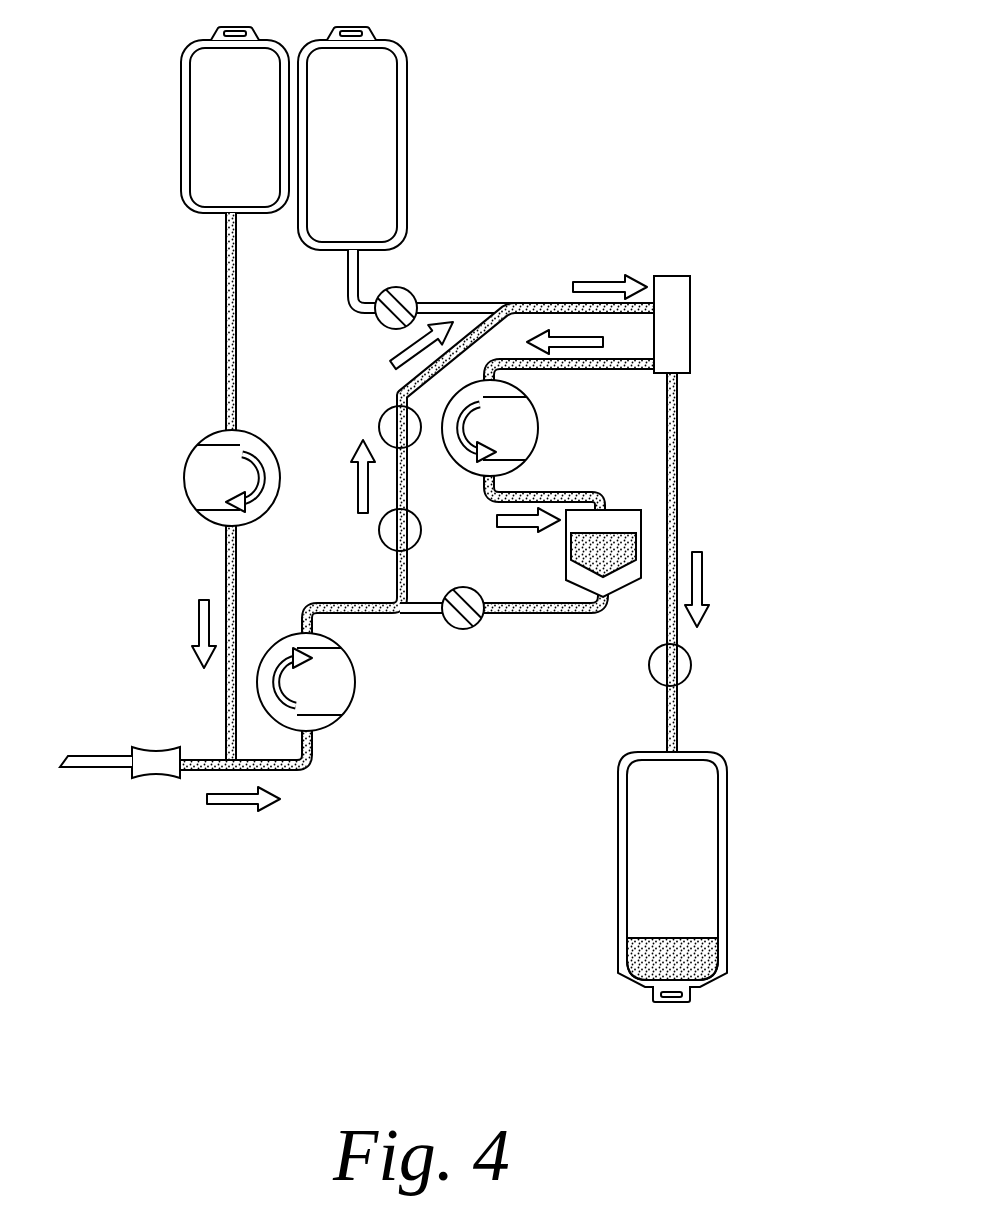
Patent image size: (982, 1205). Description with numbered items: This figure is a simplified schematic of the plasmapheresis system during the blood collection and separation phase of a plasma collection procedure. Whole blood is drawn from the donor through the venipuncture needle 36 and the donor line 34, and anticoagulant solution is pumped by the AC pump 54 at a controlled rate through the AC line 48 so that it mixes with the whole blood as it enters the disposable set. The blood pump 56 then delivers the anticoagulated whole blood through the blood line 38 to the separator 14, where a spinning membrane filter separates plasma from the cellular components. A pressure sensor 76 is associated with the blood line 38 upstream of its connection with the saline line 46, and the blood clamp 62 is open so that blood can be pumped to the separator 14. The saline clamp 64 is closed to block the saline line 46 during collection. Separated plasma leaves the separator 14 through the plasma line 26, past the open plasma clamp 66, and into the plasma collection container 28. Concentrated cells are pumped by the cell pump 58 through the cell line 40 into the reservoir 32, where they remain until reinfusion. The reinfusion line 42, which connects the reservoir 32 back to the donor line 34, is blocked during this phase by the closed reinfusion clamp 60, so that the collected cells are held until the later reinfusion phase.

The separator 14 is at (690, 296).
The plasma line 26 is at (678, 720).
The plasma collection container 28 is at (727, 823).
The reservoir 32 is at (630, 590).
The donor line 34 is at (312, 769).
The venipuncture needle 36 is at (142, 747).
The blood line 38 is at (405, 383).
The cell line 40 is at (540, 492).
The reinfusion line 42 is at (563, 615).
The saline line 46 is at (345, 285).
The AC line 48 is at (225, 557).
The AC pump 54 is at (186, 466).
The blood pump 56 is at (352, 700).
The cell pump 58 is at (538, 426).
The reinfusion clamp 60 is at (480, 626).
The blood clamp 62 is at (386, 544).
The saline clamp 64 is at (412, 296).
The plasma clamp 66 is at (692, 662).
The pressure sensor 76 is at (383, 422).